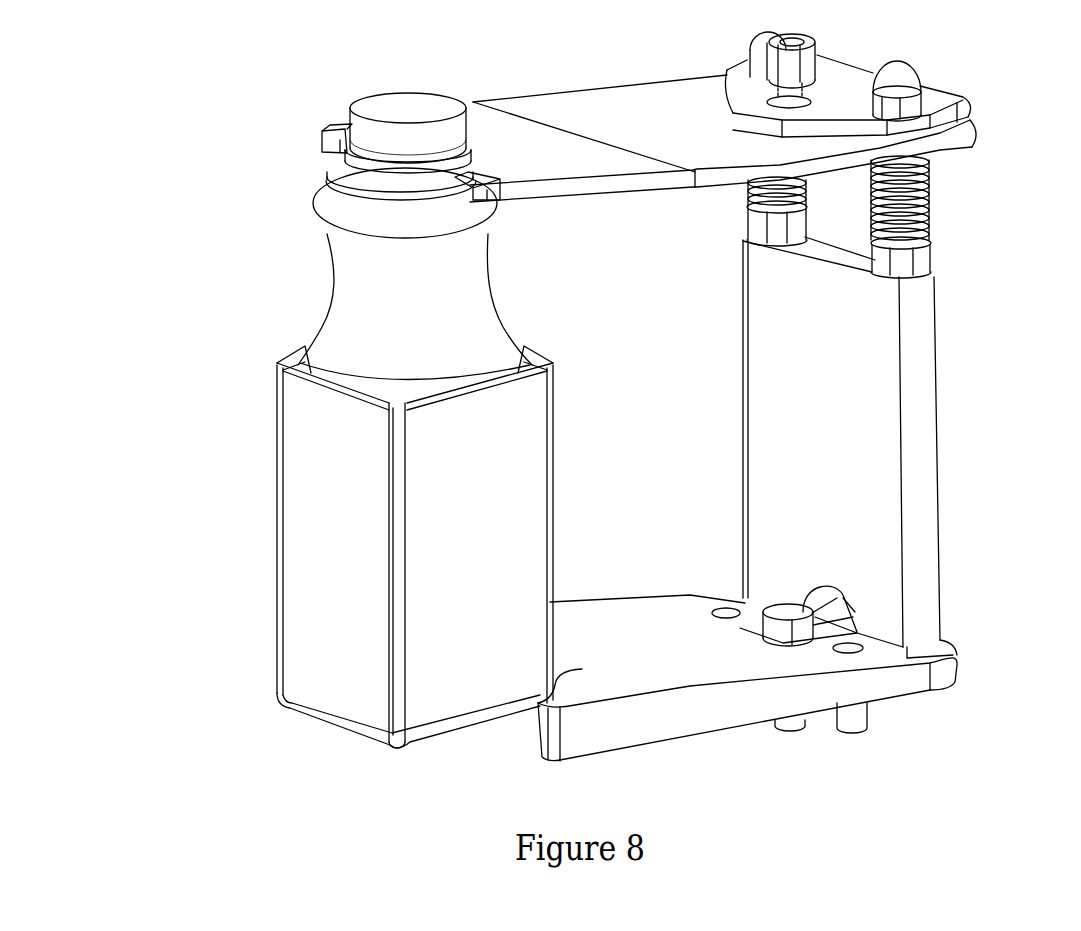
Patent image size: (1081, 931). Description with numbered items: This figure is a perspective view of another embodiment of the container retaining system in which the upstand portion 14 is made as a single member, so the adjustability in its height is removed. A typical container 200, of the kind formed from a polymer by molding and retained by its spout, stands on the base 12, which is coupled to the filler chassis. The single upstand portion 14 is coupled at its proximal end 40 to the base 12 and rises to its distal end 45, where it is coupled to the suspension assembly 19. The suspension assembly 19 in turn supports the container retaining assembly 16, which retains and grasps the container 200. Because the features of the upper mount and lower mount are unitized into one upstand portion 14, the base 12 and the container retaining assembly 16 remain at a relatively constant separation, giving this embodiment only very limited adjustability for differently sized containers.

The base 12 is at (690, 738).
The upstand portion 14 is at (942, 398).
The container retaining assembly 16 is at (946, 80).
The suspension assembly 19 is at (922, 189).
The proximal end 40 is at (944, 626).
The distal end 45 is at (930, 270).
The container 200 is at (256, 498).